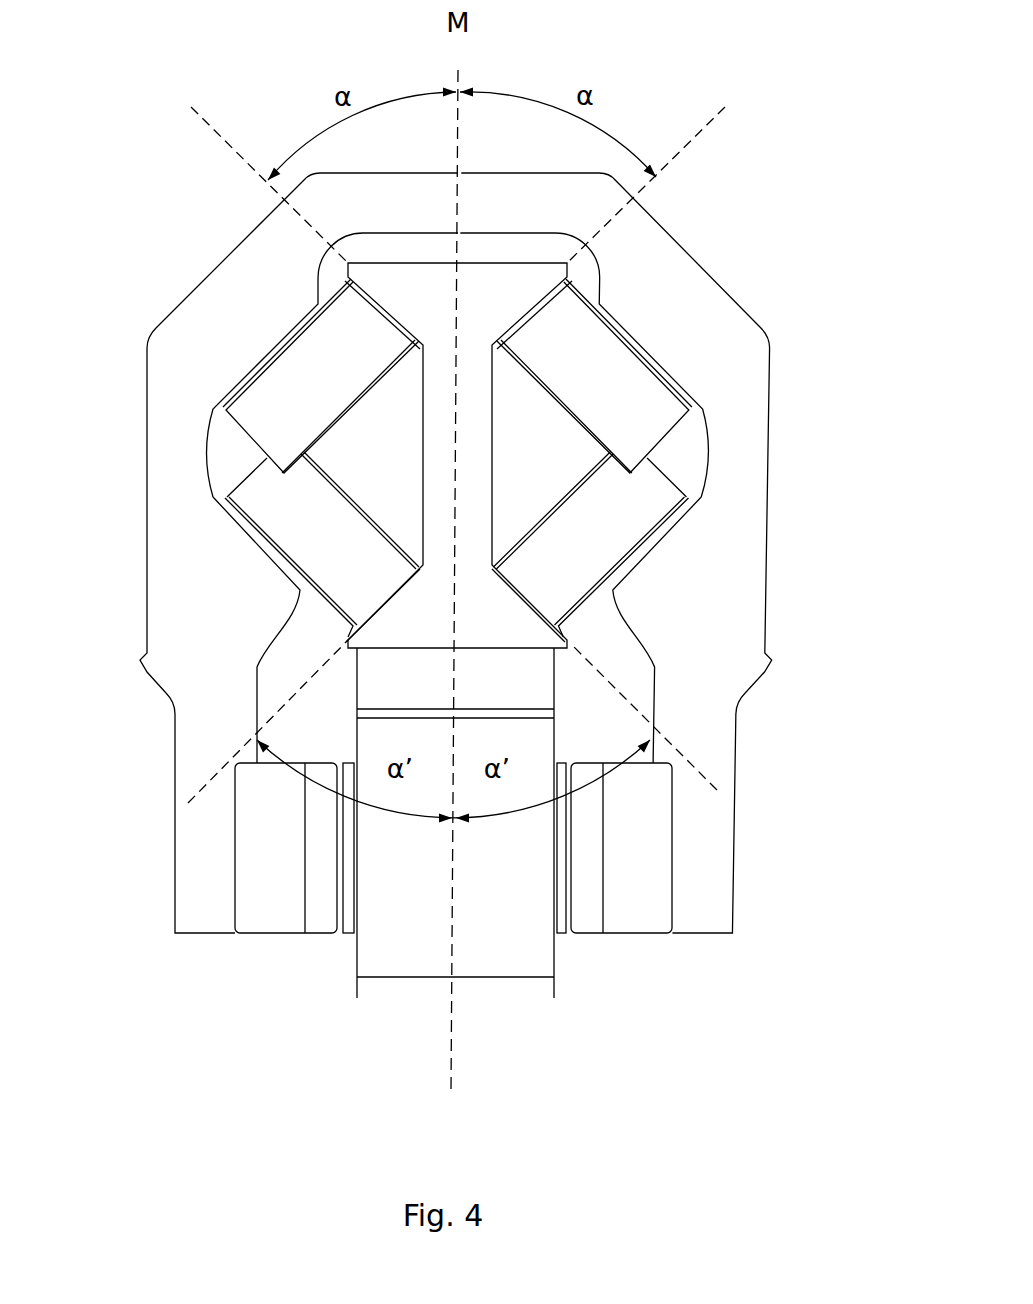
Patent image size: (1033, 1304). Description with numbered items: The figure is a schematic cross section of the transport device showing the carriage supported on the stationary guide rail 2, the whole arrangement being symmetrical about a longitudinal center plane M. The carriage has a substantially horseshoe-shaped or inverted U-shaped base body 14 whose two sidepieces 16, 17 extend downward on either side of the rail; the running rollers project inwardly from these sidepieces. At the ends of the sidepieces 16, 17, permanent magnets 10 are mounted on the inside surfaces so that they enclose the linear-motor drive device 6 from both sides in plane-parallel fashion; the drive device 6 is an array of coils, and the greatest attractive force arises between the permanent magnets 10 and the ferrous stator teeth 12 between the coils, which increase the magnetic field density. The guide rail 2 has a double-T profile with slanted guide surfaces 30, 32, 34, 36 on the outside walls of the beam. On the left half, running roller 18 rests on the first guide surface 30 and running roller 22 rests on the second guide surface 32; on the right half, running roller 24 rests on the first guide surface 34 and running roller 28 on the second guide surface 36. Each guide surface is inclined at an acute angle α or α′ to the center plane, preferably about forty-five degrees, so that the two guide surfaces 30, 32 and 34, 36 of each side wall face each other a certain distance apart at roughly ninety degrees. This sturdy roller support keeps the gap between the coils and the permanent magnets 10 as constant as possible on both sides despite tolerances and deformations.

The guide rail 2 is at (470, 462).
The linear-motor drive device 6 is at (410, 932).
The permanent magnets 10 is at (582, 907).
The stator teeth 12 is at (557, 913).
The base body 14 is at (190, 362).
The sidepiece 16 is at (188, 515).
The sidepiece 17 is at (730, 515).
The running roller 18 is at (275, 400).
The running roller 22 is at (272, 515).
The running roller 24 is at (605, 372).
The running roller 28 is at (593, 528).
The first guide surface 30 is at (387, 312).
The second guide surface 32 is at (383, 597).
The first guide surface 34 is at (540, 305).
The second guide surface 36 is at (523, 597).